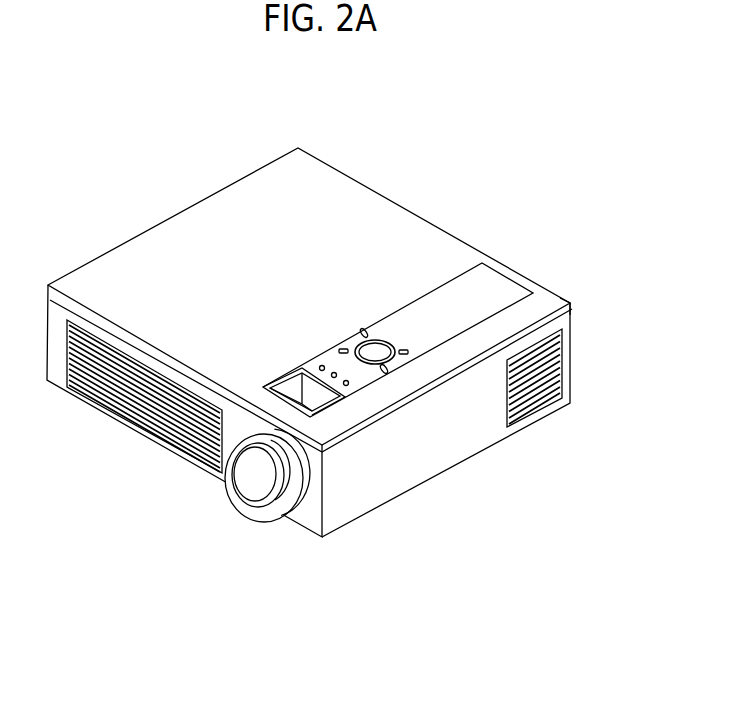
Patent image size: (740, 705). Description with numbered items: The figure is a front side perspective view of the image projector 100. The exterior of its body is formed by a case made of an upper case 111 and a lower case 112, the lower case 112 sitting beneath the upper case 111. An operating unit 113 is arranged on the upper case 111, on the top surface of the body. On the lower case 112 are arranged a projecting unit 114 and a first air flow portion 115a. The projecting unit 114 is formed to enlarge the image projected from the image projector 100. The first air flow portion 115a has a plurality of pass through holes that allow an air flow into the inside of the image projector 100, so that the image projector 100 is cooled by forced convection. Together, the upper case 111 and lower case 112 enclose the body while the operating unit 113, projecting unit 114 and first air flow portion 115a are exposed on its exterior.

The image projector 100 is at (459, 214).
The upper case 111 is at (573, 307).
The lower case 112 is at (567, 353).
The operating unit 113 is at (365, 377).
The projecting unit 114 is at (268, 480).
The first air flow portion 115a is at (138, 406).